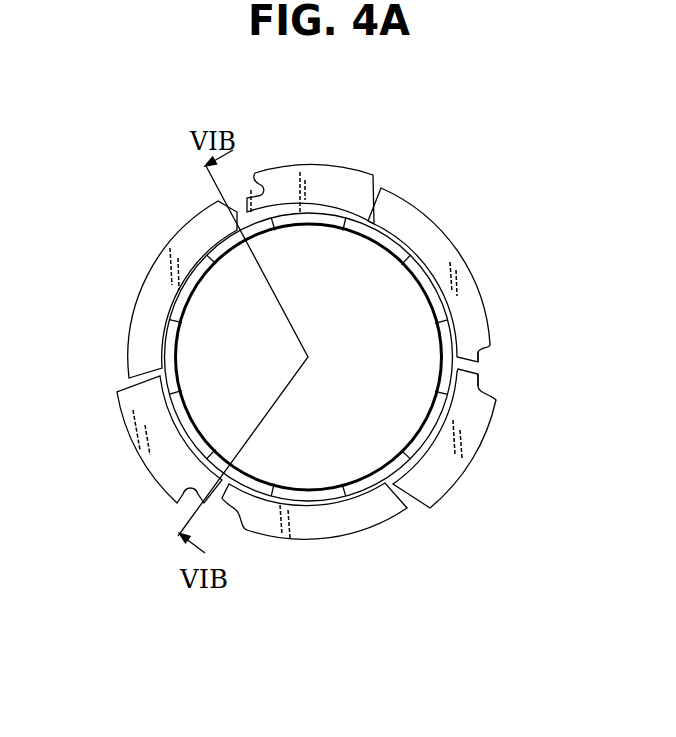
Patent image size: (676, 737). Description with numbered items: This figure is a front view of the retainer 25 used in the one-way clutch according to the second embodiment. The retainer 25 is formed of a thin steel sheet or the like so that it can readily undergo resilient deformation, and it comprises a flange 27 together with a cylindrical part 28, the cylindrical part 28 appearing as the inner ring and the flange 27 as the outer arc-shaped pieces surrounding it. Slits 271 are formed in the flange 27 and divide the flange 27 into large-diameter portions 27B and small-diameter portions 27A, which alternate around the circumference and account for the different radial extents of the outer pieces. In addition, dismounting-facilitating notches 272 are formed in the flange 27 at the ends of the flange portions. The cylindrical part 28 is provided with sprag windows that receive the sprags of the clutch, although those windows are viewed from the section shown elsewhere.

The retainer 25 is at (309, 324).
The flange 27 is at (472, 261).
The small-diameter portions 27A is at (333, 526).
The large-diameter portions 27B is at (455, 463).
The slits 271 is at (153, 377).
The dismounting-facilitating notches 272 is at (479, 372).
The cylindrical part 28 is at (442, 305).